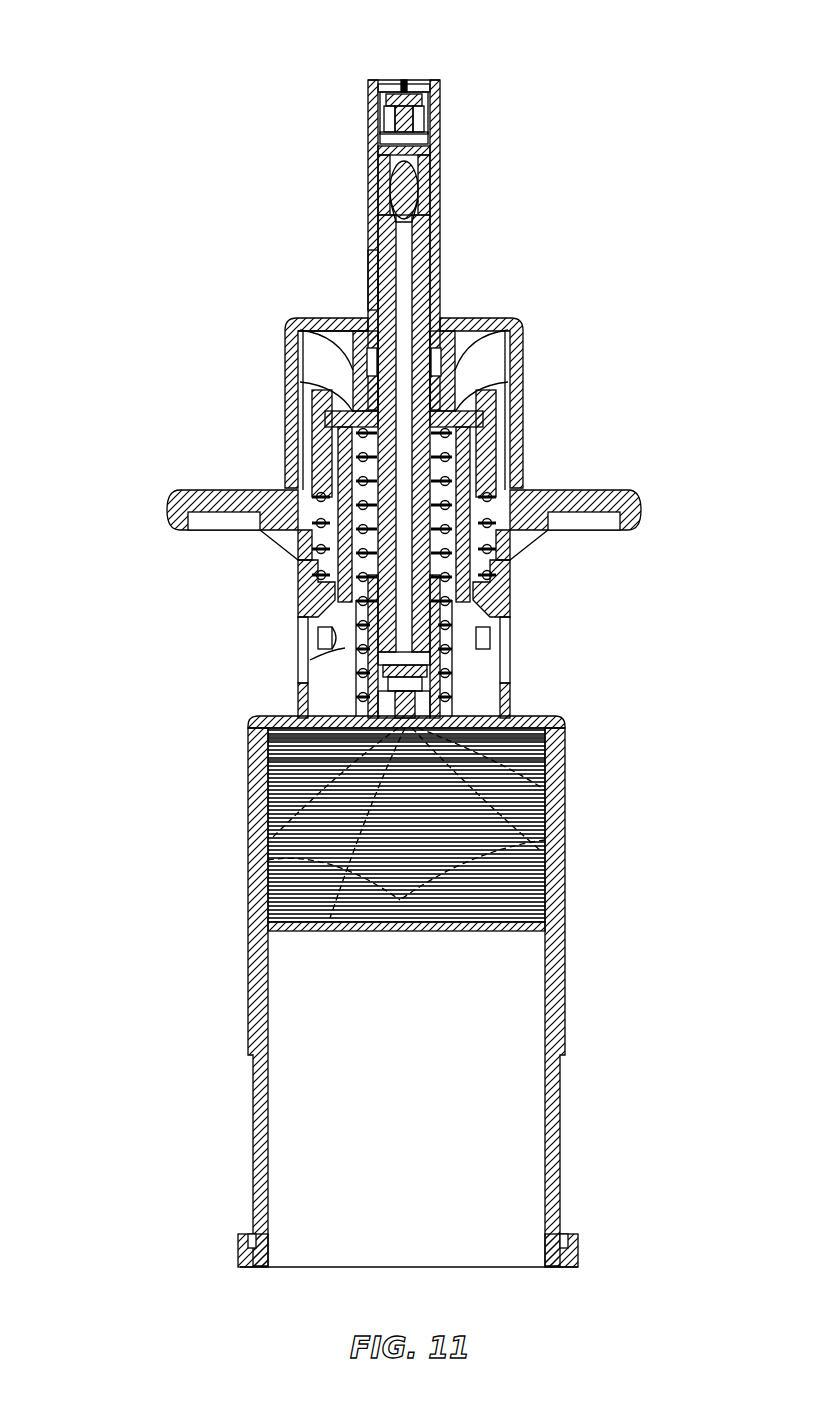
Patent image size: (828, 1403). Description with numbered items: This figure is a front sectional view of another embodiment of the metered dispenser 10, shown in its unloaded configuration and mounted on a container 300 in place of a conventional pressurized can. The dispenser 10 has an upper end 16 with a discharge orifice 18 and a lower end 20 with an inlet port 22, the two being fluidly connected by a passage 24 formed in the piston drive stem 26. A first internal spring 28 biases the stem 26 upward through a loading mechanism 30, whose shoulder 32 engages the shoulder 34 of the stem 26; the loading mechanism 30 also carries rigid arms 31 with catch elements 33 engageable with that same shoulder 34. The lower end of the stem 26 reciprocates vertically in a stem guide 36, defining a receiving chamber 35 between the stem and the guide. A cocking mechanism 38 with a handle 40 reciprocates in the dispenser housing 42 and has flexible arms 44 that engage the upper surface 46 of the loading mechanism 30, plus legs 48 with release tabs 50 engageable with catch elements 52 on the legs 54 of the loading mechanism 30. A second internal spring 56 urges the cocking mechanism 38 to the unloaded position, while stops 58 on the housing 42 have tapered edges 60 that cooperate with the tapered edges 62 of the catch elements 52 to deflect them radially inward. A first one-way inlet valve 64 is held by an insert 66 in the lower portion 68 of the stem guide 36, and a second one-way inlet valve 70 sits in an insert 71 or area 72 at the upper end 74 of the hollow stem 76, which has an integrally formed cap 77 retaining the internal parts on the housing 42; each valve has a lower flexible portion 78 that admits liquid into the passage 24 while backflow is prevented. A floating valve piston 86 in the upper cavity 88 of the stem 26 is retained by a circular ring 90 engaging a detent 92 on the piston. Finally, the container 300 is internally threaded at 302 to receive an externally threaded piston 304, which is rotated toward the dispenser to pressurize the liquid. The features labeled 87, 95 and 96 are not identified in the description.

The metered dispenser 10 is at (136, 222).
The upper end 16 is at (437, 84).
The discharge orifice 18 is at (404, 82).
The lower end 20 is at (522, 770).
The inlet port 22 is at (268, 792).
The passage 24 is at (404, 284).
The piston drive stem 26 is at (436, 244).
The first internal spring 28 is at (440, 682).
The loading mechanism 30 is at (522, 392).
The rigid arms 31 is at (355, 352).
The shoulder 32 is at (335, 414).
The catch elements 33 is at (376, 330).
The shoulder 34 is at (456, 386).
The receiving chamber 35 is at (442, 655).
The stem guide 36 is at (304, 692).
The cocking mechanism 38 is at (514, 570).
The handle 40 is at (641, 504).
The dispenser housing 42 is at (512, 702).
The flexible arms 44 is at (498, 442).
The upper surface 46 is at (350, 395).
The legs 48 is at (302, 568).
The release tabs 50 is at (304, 602).
The catch elements 52 is at (488, 592).
The legs 54 is at (500, 472).
The second internal spring 56 is at (322, 520).
The stops 58 is at (326, 634).
The tapered edge 60 is at (330, 650).
The tapered edge 62 is at (466, 626).
The first one way inlet valve 64 is at (560, 746).
The insert 66 is at (268, 752).
The lower portion 68 is at (282, 720).
The second one way inlet valve 70 is at (384, 140).
The insert 71 is at (434, 112).
The area 72 is at (386, 104).
The upper end 74 is at (372, 82).
The hollow stem 76 is at (370, 276).
The cap 77 is at (524, 412).
The lower flexible portion 78 is at (282, 832).
The floating valve piston 86 is at (380, 222).
The seat edge 87 is at (376, 250).
The upper cavity 88 is at (430, 194).
The circular ring 90 is at (432, 152).
The detent 92 is at (384, 198).
The neck wall 95 is at (380, 162).
The container lid 96 is at (530, 724).
The container 300 is at (250, 882).
The internal threads 302 is at (560, 872).
The externally threaded piston 304 is at (250, 1264).